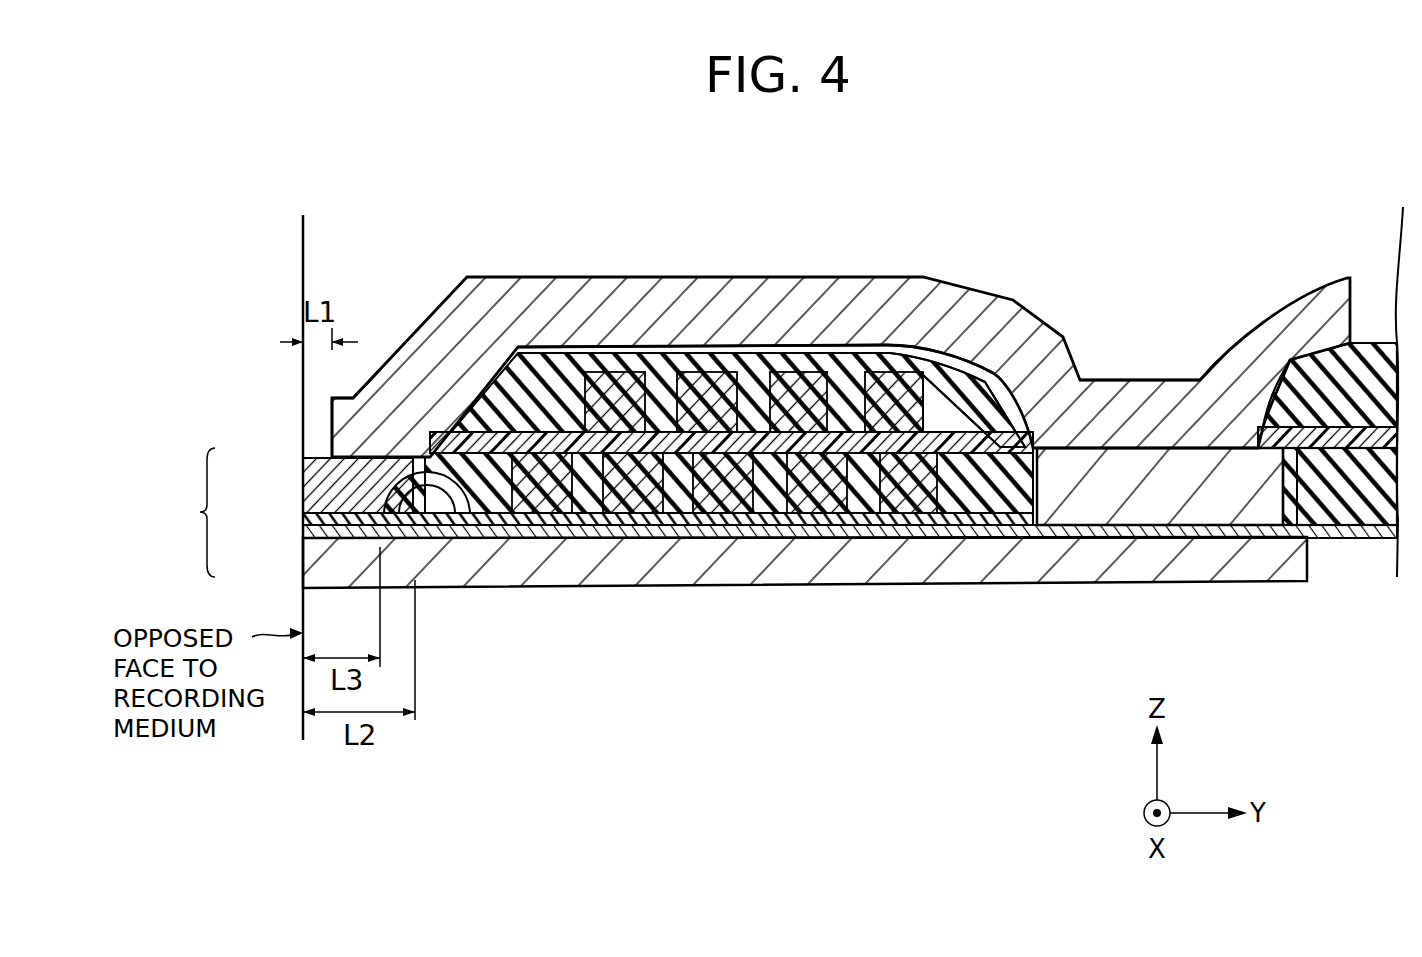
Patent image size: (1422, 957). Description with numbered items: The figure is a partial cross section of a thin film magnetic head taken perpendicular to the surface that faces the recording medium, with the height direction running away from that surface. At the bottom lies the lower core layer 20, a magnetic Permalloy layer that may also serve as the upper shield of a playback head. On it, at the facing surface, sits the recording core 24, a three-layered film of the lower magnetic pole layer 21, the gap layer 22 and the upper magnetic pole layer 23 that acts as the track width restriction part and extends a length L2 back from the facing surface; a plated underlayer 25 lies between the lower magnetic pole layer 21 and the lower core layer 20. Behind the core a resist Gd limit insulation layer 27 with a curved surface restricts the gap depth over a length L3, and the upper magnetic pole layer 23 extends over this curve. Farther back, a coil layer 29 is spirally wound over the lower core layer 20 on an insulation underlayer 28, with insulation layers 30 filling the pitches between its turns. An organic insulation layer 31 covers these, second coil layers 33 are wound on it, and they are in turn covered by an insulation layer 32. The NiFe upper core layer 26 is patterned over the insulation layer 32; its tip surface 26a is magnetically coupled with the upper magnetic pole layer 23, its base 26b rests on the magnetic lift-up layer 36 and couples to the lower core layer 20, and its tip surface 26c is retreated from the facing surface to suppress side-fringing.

The lower core layer 20 is at (1245, 565).
The lower magnetic pole layer 21 is at (327, 530).
The gap layer 22 is at (327, 520).
The upper magnetic pole layer 23 is at (333, 477).
The recording core 24 is at (191, 512).
The plated underlayer 25 is at (345, 547).
The upper core layer 26 is at (1265, 340).
The tip surface of the upper core layer 26a is at (343, 410).
The base of the upper core layer 26b is at (1158, 425).
The tip surface of the upper core layer at the side facing the recording medium 26c is at (330, 423).
The Gd limit insulation layer 27 is at (447, 517).
The insulation underlayer 28 is at (547, 440).
The coil layer 29 is at (703, 543).
The insulation layers 30 is at (470, 510).
The insulation layer 31 is at (1010, 345).
The insulation layer 32 is at (950, 393).
The second coil layers 33 is at (745, 340).
The lift-up layer 36 is at (1125, 485).